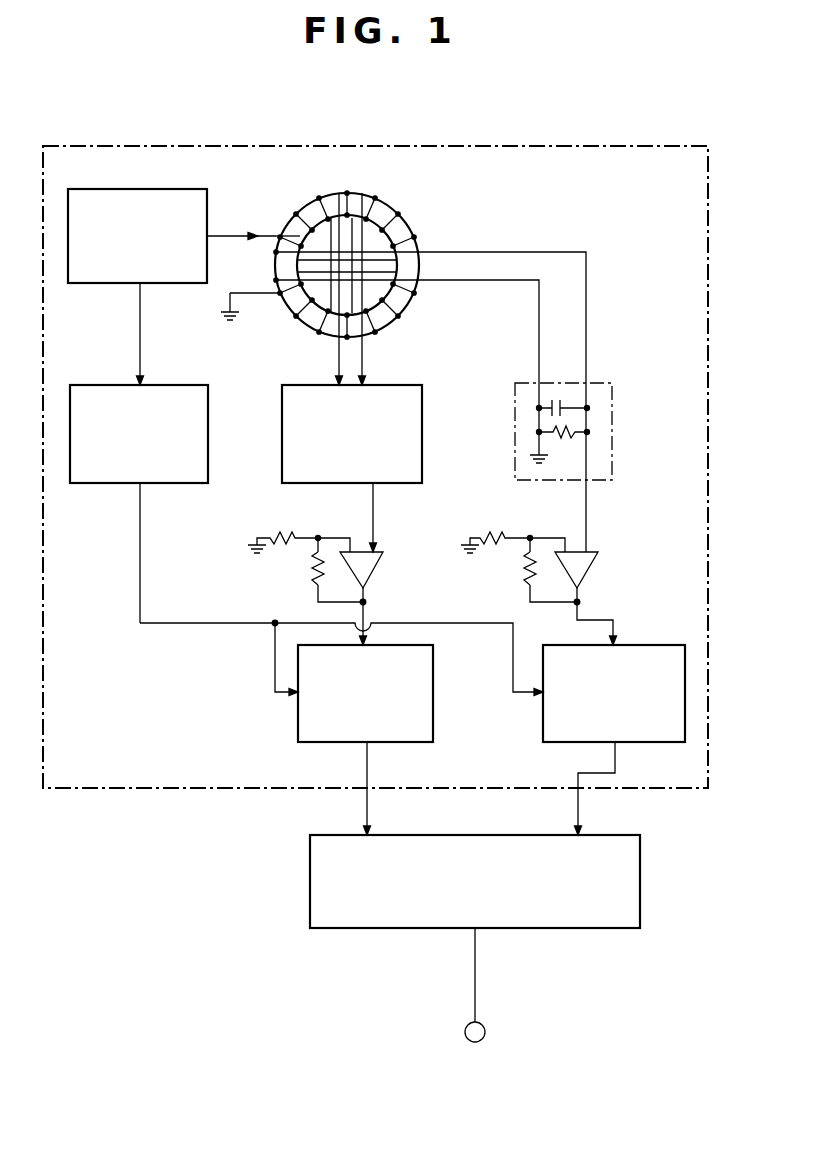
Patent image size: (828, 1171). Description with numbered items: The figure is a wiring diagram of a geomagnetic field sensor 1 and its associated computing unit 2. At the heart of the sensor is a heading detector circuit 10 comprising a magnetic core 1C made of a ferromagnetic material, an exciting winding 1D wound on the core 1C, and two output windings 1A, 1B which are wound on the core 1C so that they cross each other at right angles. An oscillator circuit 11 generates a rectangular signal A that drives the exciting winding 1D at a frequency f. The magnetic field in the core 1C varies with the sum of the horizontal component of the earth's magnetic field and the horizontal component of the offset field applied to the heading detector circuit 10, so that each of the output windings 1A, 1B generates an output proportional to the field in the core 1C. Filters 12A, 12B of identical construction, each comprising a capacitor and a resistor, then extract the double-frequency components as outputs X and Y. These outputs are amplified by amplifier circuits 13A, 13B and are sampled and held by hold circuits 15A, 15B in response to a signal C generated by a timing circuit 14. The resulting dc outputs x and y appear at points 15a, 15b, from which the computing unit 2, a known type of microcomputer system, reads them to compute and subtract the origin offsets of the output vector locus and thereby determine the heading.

The geomagnetic field sensor 1 is at (710, 472).
The computing unit 2 is at (605, 835).
The heading detector circuit 10 is at (385, 196).
The output winding 1A is at (490, 252).
The output winding 1B is at (363, 360).
The magnetic core 1C is at (412, 240).
The exciting winding 1D is at (258, 236).
The oscillator circuit 11 is at (165, 171).
The filter 12A is at (612, 423).
The filter 12B is at (422, 440).
The amplifier circuit 13A is at (585, 565).
The amplifier circuit 13B is at (370, 574).
The timing circuit 14 is at (116, 385).
The hold circuit 15A is at (630, 645).
The hold circuit 15B is at (433, 683).
The point 15a is at (578, 780).
The point 15b is at (366, 782).